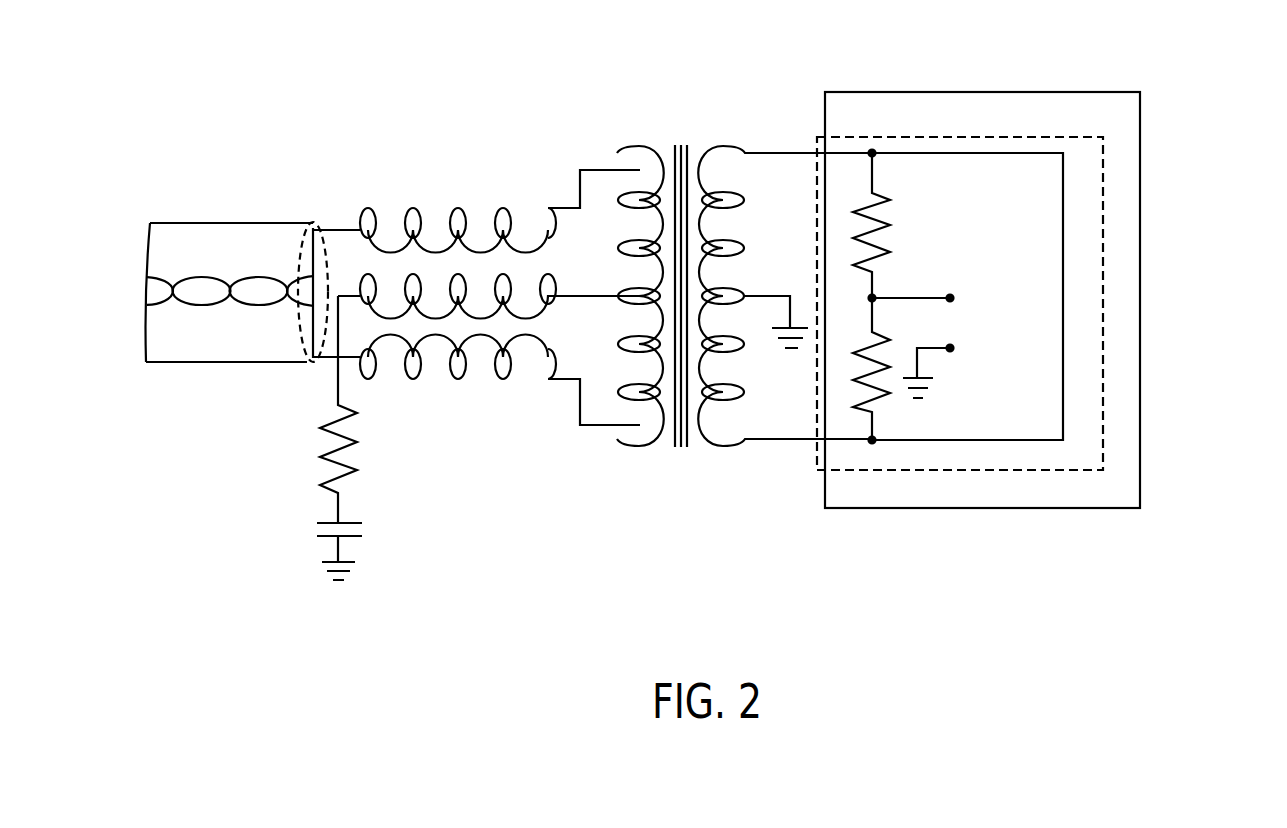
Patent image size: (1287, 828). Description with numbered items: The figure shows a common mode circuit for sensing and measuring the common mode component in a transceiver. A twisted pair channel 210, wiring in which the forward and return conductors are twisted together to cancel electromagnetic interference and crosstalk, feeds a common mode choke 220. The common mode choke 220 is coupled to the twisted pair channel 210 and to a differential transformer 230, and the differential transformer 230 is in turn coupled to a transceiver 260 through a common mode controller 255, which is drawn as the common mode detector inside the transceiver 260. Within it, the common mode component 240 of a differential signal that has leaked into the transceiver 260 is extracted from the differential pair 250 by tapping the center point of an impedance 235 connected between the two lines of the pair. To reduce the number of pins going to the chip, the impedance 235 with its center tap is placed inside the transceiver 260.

The twisted pair channel 210 is at (225, 203).
The common mode choke 220 is at (467, 186).
The differential transformer 230 is at (678, 136).
The impedance 235 is at (862, 313).
The common mode component 240 is at (955, 339).
The differential pair 250 is at (1063, 287).
The common mode controller 255 is at (1079, 136).
The transceiver 260 is at (994, 92).